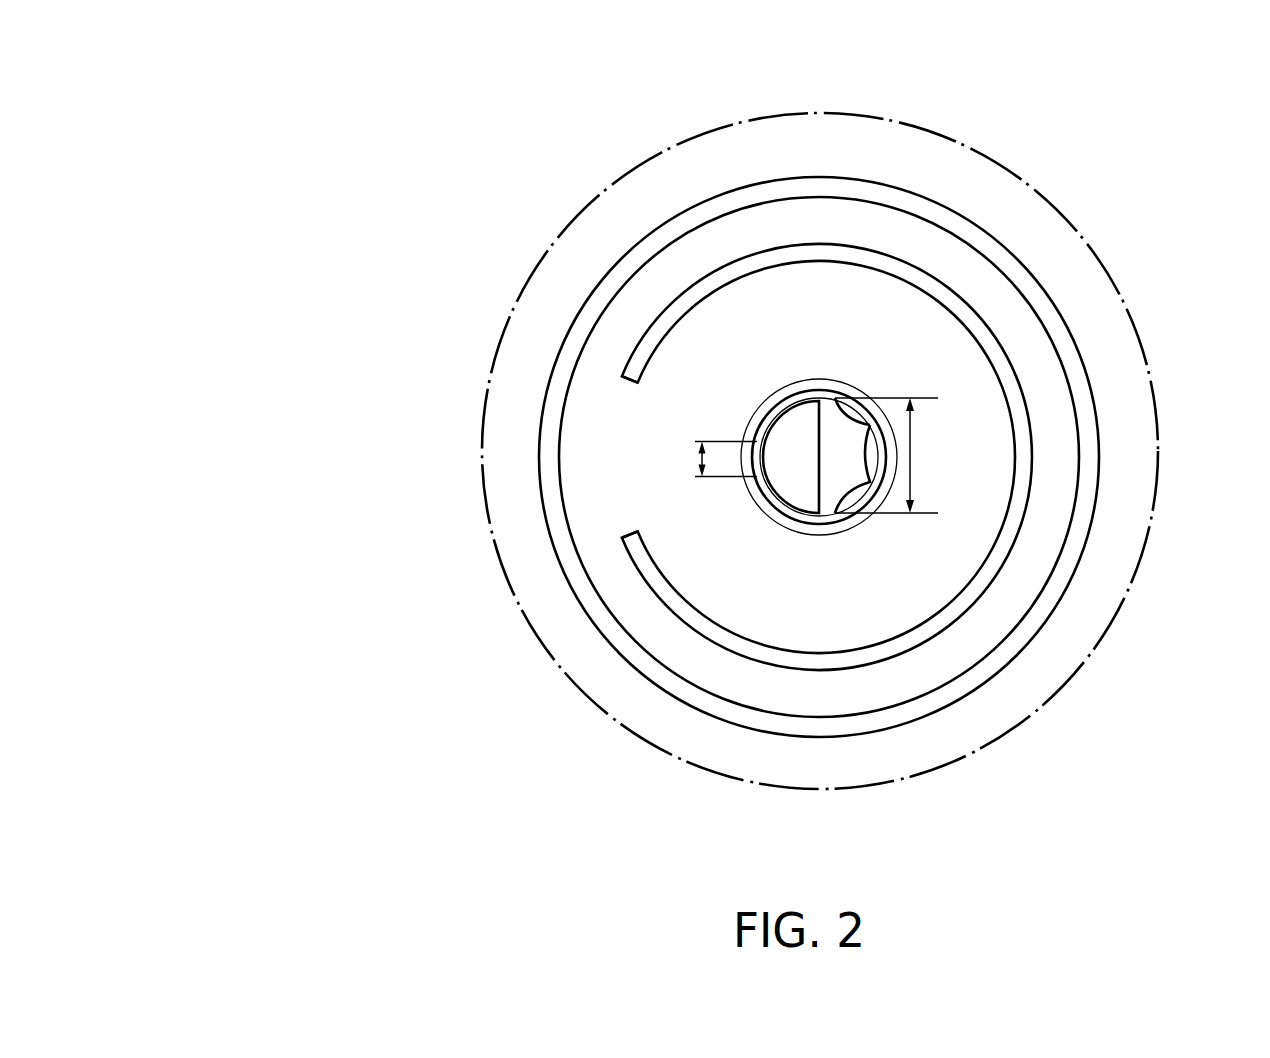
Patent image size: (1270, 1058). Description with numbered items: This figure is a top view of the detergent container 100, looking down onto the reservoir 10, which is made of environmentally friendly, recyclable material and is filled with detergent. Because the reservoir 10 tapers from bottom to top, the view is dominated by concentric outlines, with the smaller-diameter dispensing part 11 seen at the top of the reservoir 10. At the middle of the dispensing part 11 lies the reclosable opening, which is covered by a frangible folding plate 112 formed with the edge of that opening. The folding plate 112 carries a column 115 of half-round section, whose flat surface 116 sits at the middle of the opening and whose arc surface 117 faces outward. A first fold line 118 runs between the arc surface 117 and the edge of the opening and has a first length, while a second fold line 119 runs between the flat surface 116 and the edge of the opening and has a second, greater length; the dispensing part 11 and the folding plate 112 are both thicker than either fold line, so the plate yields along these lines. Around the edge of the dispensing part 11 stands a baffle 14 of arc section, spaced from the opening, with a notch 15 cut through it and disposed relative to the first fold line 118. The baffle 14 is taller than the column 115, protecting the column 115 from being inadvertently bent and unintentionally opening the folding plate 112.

The detergent container 100 is at (362, 173).
The reservoir 10 is at (955, 183).
The dispensing part 11 is at (900, 557).
The baffle 14 is at (930, 632).
The notch 15 is at (623, 457).
The folding plate 112 is at (830, 418).
The column 115 is at (790, 428).
The flat surface 116 is at (818, 482).
The arc surface 117 is at (767, 490).
The first fold line 118 is at (757, 452).
The second fold line 119 is at (855, 418).